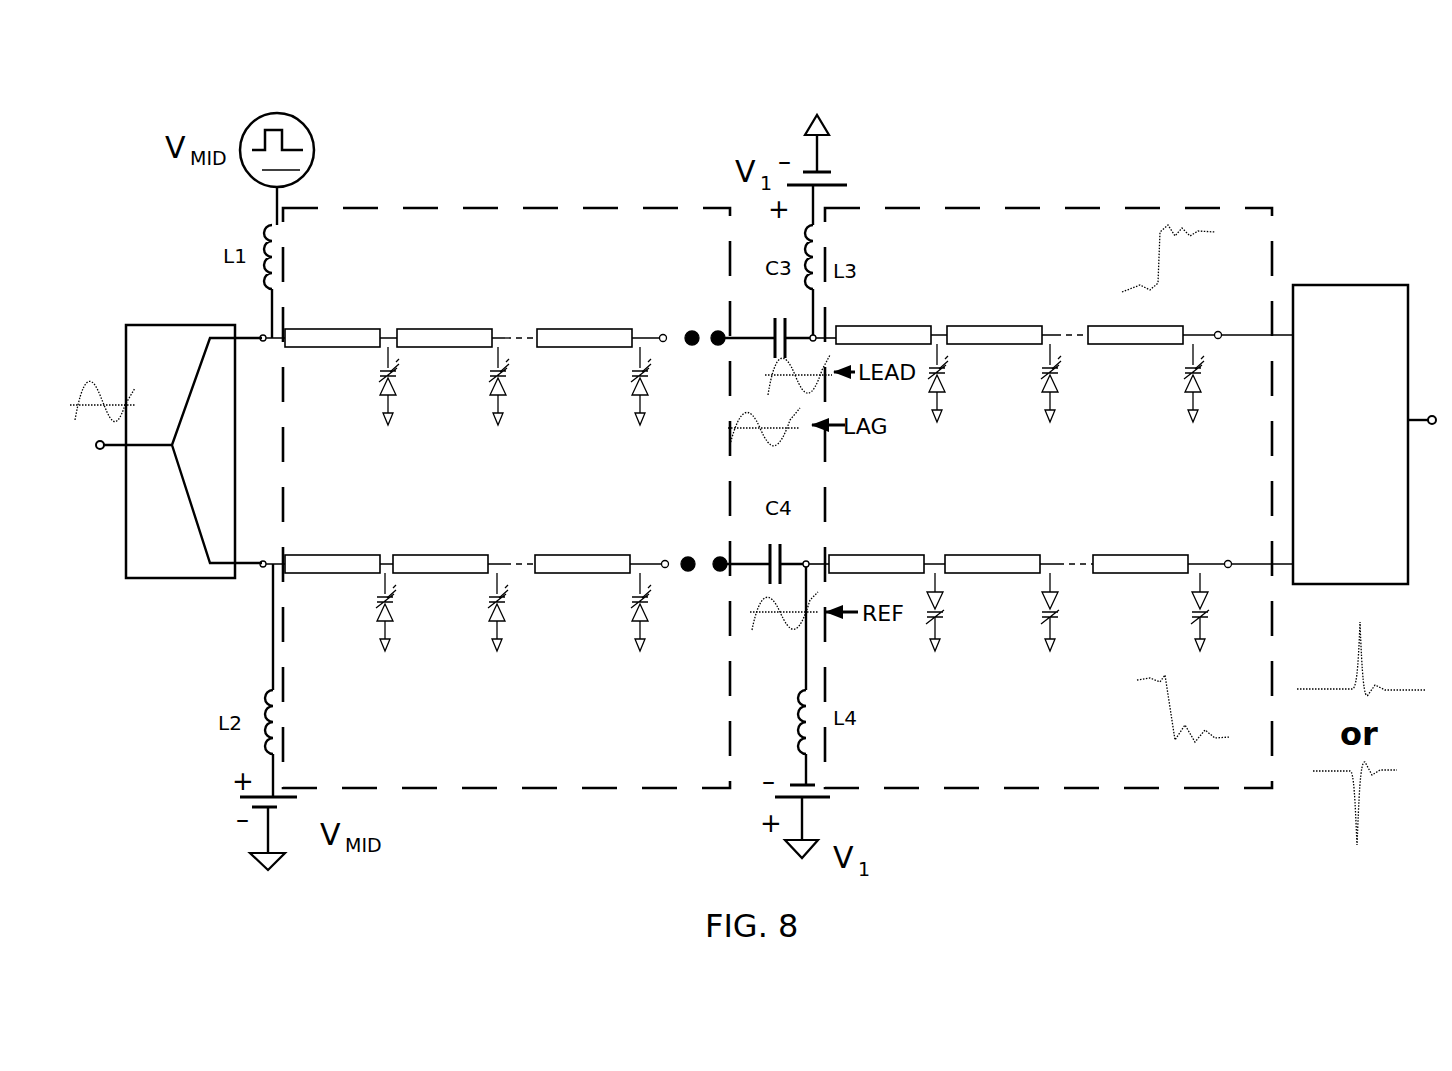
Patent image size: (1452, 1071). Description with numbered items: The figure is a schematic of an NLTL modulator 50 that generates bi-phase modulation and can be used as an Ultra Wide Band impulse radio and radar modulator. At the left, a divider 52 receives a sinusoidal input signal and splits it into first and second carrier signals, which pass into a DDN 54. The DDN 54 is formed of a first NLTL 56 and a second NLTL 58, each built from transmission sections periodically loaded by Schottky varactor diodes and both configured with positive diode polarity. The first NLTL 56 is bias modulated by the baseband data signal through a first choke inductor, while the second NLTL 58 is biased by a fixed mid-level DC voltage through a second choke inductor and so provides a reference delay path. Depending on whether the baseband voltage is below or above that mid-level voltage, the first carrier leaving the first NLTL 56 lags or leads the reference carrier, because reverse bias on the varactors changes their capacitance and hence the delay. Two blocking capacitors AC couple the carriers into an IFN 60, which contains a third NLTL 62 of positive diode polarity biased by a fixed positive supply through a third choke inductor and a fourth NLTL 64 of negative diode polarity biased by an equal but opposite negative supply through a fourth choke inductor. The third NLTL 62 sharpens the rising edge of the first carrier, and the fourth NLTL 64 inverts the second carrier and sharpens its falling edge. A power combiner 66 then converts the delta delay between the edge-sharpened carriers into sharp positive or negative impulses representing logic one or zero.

The NLTL modulator 50 is at (1110, 97).
The divider 52 is at (178, 325).
The DDN 54 is at (568, 208).
The first NLTL 56 is at (537, 286).
The second NLTL 58 is at (530, 529).
The IFN 60 is at (1108, 208).
The third NLTL 62 is at (967, 287).
The fourth NLTL 64 is at (940, 530).
The power combiner 66 is at (1347, 285).